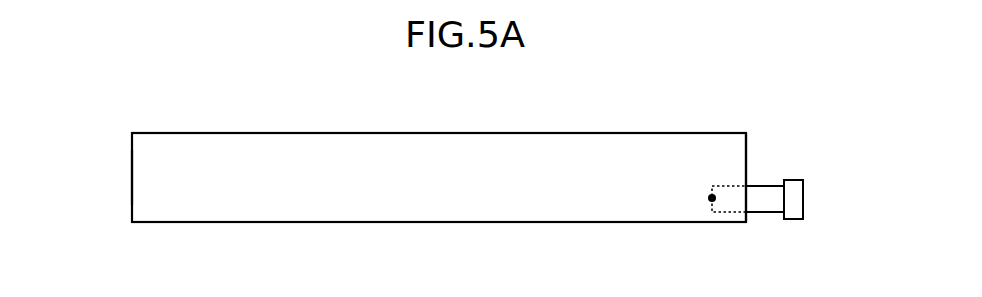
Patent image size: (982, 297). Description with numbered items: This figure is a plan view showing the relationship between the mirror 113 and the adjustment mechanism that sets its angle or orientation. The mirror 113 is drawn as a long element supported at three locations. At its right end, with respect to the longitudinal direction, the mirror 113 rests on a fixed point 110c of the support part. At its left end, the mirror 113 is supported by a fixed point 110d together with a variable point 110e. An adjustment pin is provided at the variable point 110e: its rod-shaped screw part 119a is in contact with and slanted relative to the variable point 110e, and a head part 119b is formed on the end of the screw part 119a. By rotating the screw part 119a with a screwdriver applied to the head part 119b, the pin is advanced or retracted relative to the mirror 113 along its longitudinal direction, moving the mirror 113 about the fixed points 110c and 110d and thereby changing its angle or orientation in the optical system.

The mirror 113 is at (543, 118).
The fixed point 110c is at (152, 175).
The fixed point 110d is at (717, 149).
The variable point 110e is at (710, 203).
The screw part 119a is at (764, 193).
The head part 119b is at (793, 197).